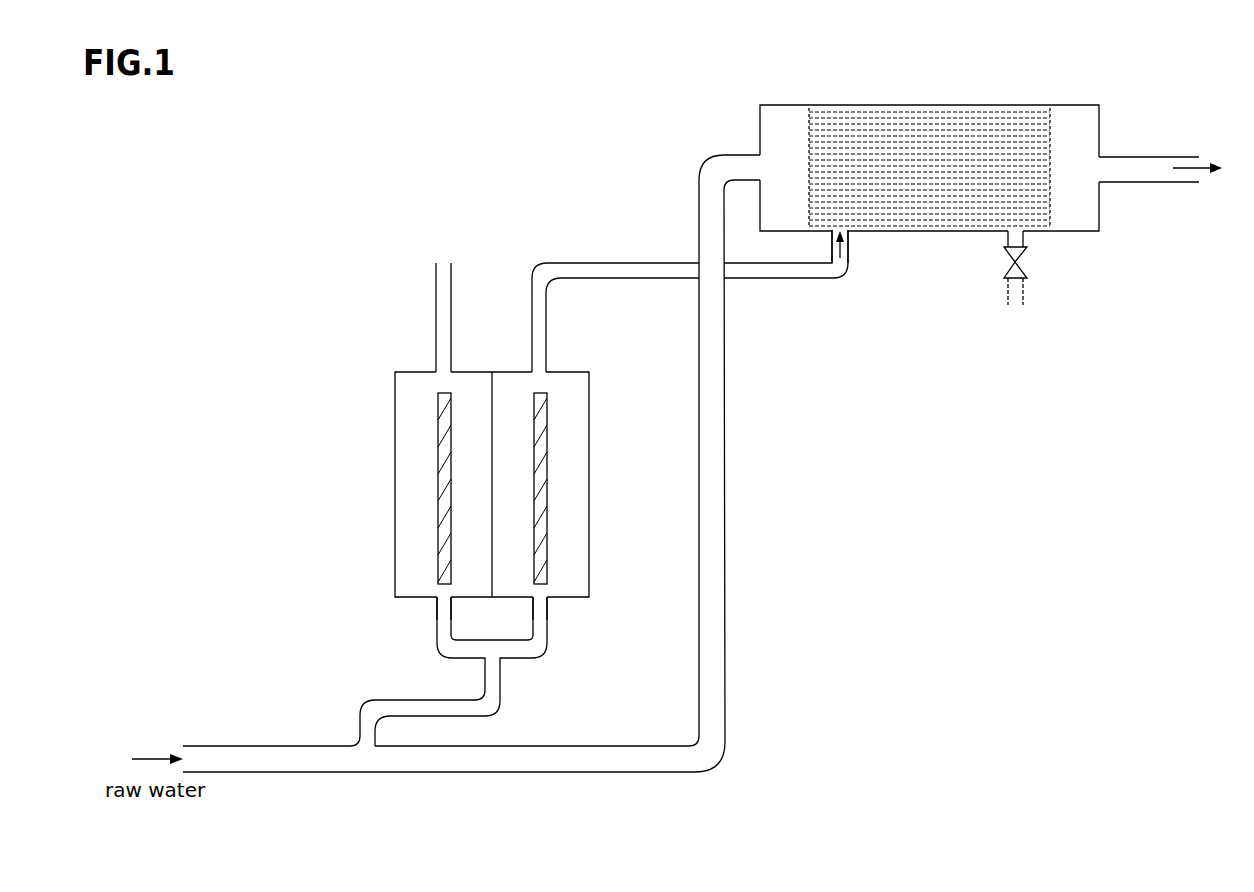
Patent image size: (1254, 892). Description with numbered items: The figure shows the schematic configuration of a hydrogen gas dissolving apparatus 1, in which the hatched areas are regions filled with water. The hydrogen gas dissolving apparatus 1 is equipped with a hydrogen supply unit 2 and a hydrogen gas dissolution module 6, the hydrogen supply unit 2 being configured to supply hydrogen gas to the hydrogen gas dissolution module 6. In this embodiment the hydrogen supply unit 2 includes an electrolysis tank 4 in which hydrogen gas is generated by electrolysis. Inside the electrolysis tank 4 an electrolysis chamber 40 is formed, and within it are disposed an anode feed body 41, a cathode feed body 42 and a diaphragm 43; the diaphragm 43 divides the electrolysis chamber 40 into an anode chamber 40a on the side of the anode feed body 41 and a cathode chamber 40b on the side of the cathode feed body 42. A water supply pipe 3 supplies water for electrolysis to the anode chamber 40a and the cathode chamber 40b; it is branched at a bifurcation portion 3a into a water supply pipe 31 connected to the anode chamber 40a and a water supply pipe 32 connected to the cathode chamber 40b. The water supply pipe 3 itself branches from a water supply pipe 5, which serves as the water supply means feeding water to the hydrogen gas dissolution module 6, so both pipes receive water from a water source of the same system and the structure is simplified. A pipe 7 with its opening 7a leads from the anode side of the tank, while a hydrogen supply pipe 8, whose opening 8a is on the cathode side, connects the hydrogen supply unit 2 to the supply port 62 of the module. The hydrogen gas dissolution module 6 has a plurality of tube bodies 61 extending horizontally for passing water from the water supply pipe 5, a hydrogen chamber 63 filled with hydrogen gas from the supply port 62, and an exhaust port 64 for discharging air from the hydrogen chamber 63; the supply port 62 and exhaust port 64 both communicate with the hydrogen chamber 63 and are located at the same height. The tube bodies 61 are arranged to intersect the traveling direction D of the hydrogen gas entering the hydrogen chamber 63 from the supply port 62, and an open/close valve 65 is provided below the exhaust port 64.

The hydrogen gas dissolving apparatus 1 is at (1250, 72).
The hydrogen supply unit 2 is at (469, 456).
The electrolysis tank 4 is at (476, 479).
The water supply pipe 3 is at (378, 700).
The bifurcation portion 3a is at (490, 650).
The water supply pipe 5 is at (716, 495).
The hydrogen gas dissolution module 6 is at (1002, 201).
The oxygen gas discharge pipe 7 is at (395, 302).
The opening of discharge pipe 7a is at (443, 370).
The hydrogen supply pipe 8 is at (690, 266).
The opening of supply pipe 8a is at (547, 368).
The water supply pipe 31 is at (445, 622).
The water supply pipe 32 is at (547, 622).
The electrolysis chamber 40 is at (476, 479).
The anode chamber 40a is at (382, 484).
The cathode chamber 40b is at (566, 484).
The anode feed body 41 is at (444, 545).
The cathode feed body 42 is at (540, 513).
The diaphragm 43 is at (490, 430).
The tube body 61 is at (957, 125).
The supply port 62 is at (844, 287).
The hydrogen chamber 63 is at (890, 118).
The exhaust port 64 is at (1015, 238).
The open/close valve 65 is at (1005, 262).
The traveling direction D is at (830, 255).